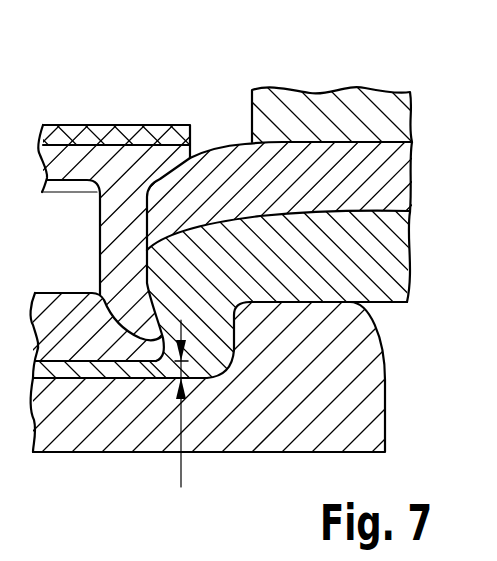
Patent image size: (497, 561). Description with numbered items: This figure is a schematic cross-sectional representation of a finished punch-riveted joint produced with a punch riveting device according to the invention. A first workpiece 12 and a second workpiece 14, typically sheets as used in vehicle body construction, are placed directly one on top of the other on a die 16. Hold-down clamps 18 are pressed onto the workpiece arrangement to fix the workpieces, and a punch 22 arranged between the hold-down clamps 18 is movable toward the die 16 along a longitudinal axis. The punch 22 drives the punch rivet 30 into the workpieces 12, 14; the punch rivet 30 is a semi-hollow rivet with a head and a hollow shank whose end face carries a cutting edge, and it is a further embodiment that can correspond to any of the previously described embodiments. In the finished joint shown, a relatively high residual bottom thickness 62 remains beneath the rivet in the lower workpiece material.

The punch 22 is at (73, 137).
The punch rivet 30 is at (130, 173).
The hold-down clamps 18 is at (340, 107).
The first workpiece 12 is at (393, 175).
The second workpiece 14 is at (392, 255).
The die 16 is at (370, 403).
The residual bottom thickness 62 is at (180, 473).